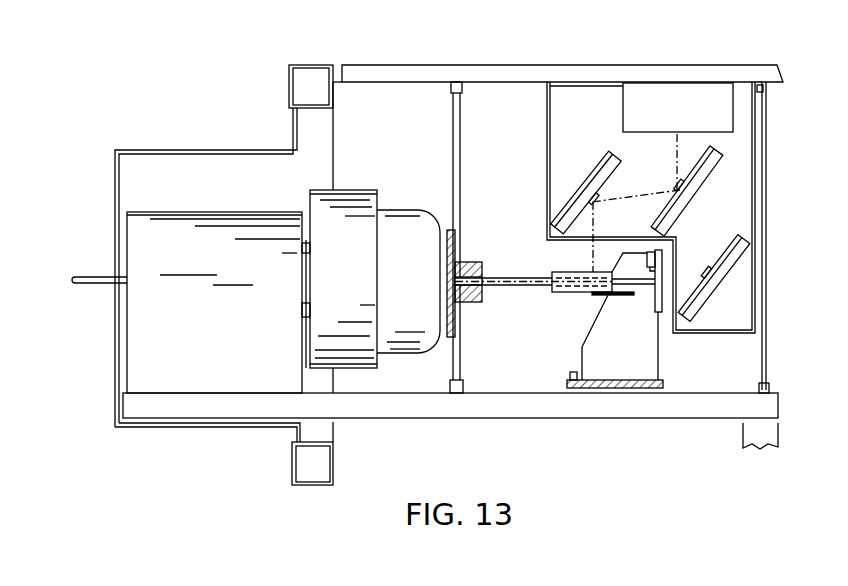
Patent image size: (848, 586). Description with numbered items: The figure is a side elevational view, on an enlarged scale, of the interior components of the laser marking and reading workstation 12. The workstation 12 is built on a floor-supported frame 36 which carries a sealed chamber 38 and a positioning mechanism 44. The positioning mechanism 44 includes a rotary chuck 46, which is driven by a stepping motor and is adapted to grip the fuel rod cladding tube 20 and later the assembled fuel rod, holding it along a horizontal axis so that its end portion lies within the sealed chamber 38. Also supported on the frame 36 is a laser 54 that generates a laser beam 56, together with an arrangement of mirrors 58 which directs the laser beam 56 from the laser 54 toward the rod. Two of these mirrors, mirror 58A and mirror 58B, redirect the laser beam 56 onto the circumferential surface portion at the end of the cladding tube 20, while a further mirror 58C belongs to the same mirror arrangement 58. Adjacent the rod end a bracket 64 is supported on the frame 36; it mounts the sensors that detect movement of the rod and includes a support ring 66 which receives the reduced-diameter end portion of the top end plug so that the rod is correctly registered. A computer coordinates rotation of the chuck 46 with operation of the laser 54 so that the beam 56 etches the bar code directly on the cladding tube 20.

The laser marking and reading workstation 12 is at (743, 55).
The fuel rod cladding tube 20 is at (93, 275).
The floor-supported frame 36 is at (292, 460).
The sealed chamber 38 is at (580, 107).
The positioning mechanism 44 is at (162, 398).
The rotary chuck 46 is at (424, 294).
The laser 54 is at (648, 97).
The laser beam 56 is at (641, 190).
The arrangement of mirrors 58 is at (663, 232).
The mirror 58A is at (668, 198).
The mirror 58B is at (580, 228).
The third mirror 58C is at (702, 273).
The bracket 64 is at (630, 372).
The support ring 66 is at (653, 293).